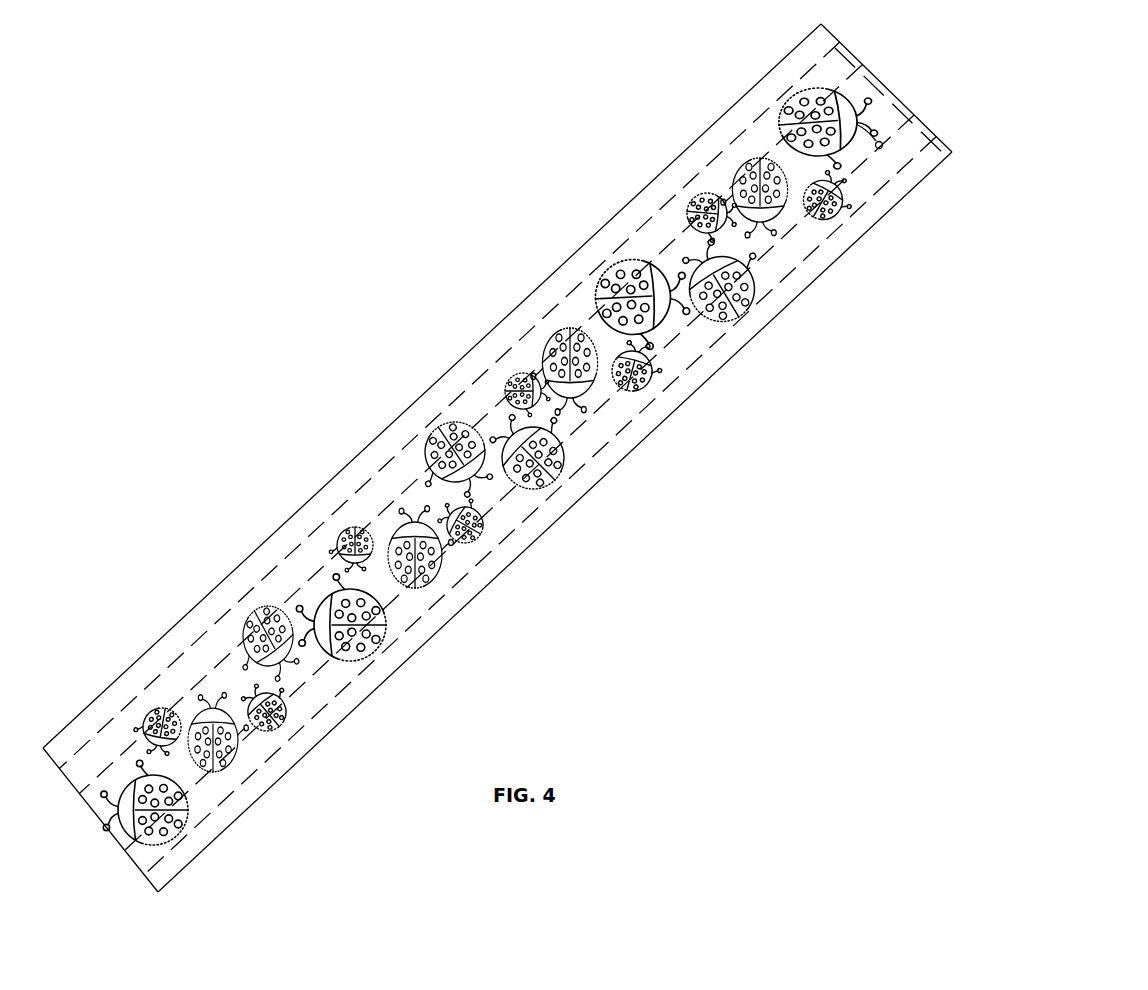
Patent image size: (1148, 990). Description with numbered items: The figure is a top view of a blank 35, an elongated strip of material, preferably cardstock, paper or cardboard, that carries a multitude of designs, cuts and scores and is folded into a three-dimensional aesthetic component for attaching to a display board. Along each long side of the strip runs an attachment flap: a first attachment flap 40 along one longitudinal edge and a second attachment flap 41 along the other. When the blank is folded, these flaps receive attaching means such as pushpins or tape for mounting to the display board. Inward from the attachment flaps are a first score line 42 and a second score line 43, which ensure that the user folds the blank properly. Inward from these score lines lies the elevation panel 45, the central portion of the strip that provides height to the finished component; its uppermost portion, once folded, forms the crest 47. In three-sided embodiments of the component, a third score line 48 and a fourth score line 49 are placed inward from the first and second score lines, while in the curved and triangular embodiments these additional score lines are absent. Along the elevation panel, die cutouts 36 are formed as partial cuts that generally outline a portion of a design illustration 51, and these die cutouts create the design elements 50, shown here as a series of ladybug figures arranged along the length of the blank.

The blank 35 is at (398, 268).
The die cutouts 36 is at (258, 608).
The first attachment flap 40 is at (647, 198).
The second attachment flap 41 is at (717, 352).
The first score line 42 is at (757, 122).
The second score line 43 is at (843, 222).
The elevation panel 45 is at (530, 355).
The crest 47 is at (488, 496).
The third score line 48 is at (838, 88).
The fourth score line 49 is at (881, 142).
The design elements 50 is at (413, 585).
The design illustration 51 is at (243, 732).